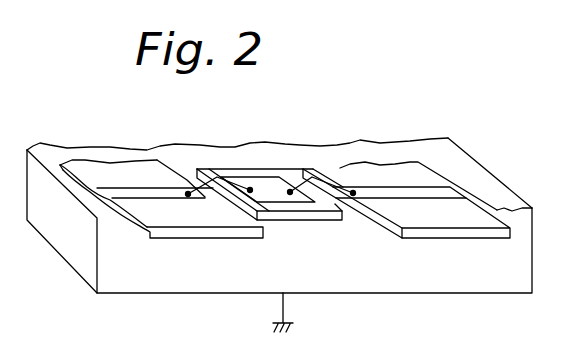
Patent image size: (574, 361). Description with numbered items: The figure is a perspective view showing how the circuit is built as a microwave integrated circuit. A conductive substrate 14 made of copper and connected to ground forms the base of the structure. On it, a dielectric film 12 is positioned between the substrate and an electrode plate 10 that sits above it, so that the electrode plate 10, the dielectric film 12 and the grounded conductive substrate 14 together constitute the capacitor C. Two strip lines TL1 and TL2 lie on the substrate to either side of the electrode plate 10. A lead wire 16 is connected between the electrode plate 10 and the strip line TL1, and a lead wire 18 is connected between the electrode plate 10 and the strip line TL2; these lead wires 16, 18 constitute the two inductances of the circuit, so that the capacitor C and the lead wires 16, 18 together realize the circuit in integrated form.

The strip line TL1 is at (136, 173).
The strip line TL2 is at (406, 168).
The electrode plate 10 is at (278, 185).
The dielectric film 12 is at (208, 169).
The conductive substrate 14 is at (370, 285).
The lead wire 16 is at (215, 184).
The lead wire 18 is at (306, 176).
The capacitor C is at (258, 122).